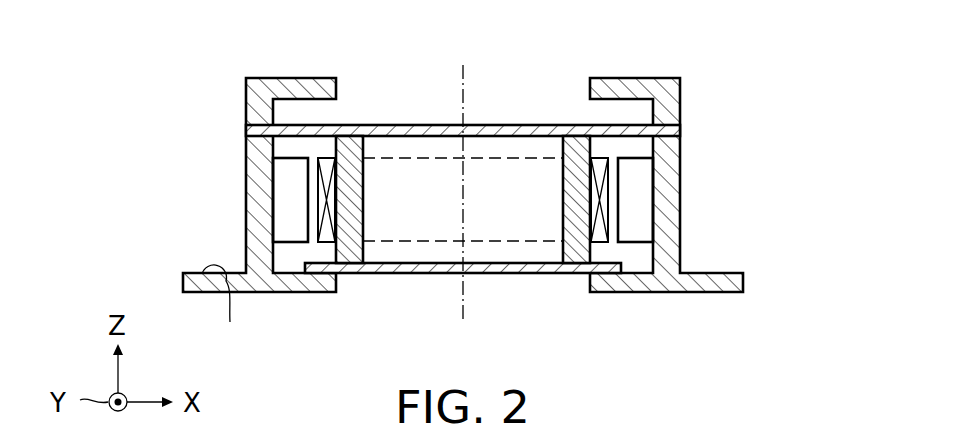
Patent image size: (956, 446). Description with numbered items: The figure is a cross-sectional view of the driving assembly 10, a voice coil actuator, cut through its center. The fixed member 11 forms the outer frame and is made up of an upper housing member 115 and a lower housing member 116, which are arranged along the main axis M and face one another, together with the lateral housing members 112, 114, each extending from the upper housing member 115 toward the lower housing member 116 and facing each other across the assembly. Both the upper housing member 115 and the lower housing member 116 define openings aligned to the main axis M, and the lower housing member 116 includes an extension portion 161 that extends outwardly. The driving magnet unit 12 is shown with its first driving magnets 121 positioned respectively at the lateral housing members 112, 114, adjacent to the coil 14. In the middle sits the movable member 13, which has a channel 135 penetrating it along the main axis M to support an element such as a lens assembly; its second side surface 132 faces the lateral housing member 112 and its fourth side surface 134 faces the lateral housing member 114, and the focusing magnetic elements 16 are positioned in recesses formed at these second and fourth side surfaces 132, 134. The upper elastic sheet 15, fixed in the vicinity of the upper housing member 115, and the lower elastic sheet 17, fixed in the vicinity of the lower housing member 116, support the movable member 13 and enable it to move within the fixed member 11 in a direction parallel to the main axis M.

The driving assembly 10 is at (144, 83).
The fixed member 11 is at (462, 187).
The upper housing member 115 is at (298, 88).
The lateral housing member 112 is at (260, 217).
The lateral housing member 114 is at (665, 222).
The lower housing member 116 is at (182, 285).
The extension portion 161 is at (230, 310).
The driving magnet unit 12 is at (680, 130).
The upper elastic sheet 15 is at (270, 130).
The movable member 13 is at (416, 270).
The lower elastic sheet 17 is at (492, 270).
The coil 14 is at (323, 177).
The first driving magnet 121 is at (288, 185).
The second side surface 132 is at (340, 250).
The fourth side surface 134 is at (590, 250).
The focusing magnetic element 16 is at (343, 217).
The channel 135 is at (431, 146).
The main axis M is at (459, 178).